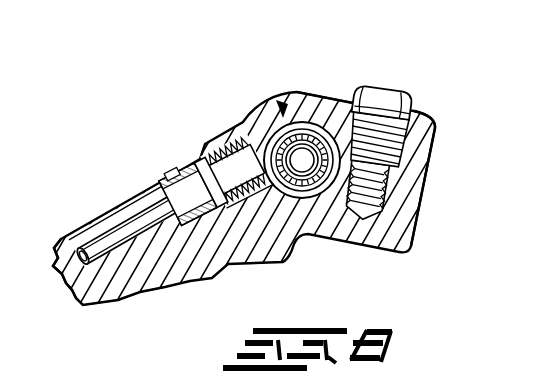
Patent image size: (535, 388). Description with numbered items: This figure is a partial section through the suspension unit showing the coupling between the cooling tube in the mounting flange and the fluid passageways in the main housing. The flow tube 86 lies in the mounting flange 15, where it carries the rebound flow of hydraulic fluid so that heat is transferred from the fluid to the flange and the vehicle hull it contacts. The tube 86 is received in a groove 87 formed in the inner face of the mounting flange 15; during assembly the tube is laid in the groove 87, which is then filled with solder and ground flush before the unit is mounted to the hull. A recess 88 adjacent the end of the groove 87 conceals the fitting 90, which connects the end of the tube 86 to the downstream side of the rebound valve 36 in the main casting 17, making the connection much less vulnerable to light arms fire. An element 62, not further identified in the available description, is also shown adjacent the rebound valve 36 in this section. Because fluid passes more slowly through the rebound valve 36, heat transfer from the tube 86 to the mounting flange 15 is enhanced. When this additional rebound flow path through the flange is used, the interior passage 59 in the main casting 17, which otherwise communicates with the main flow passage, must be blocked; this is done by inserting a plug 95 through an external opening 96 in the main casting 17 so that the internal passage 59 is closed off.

The mounting flange 15 is at (93, 287).
The main casting 17 is at (203, 260).
The rebound valve 36 is at (281, 112).
The interior passage 59 is at (328, 100).
The bearing race / fitting threads 62 is at (274, 152).
The flow tube 86 is at (104, 224).
The groove 87 is at (61, 240).
The recess 88 is at (157, 186).
The fitting 90 is at (182, 148).
The plug 95 is at (381, 106).
The external opening 96 is at (416, 126).